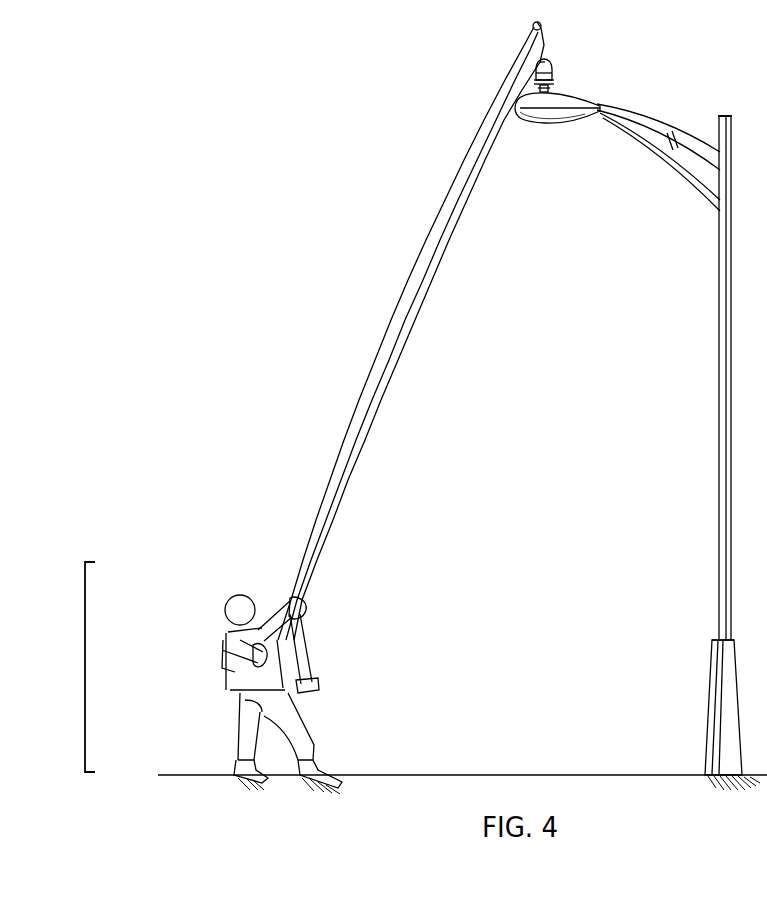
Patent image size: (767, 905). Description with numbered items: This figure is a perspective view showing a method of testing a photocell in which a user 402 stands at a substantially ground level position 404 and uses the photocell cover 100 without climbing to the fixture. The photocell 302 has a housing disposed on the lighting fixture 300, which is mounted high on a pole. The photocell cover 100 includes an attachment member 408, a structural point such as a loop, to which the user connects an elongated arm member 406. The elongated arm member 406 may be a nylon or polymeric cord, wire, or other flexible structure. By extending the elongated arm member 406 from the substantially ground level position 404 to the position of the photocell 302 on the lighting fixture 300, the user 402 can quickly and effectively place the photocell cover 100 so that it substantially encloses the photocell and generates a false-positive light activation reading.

The photocell cover 100 is at (555, 72).
The lighting fixture 300 is at (559, 122).
The photocell 302 is at (549, 88).
The user 402 is at (230, 643).
The substantially ground level position 404 is at (85, 667).
The elongated arm member 406 is at (401, 302).
The attachment member 408 is at (542, 62).